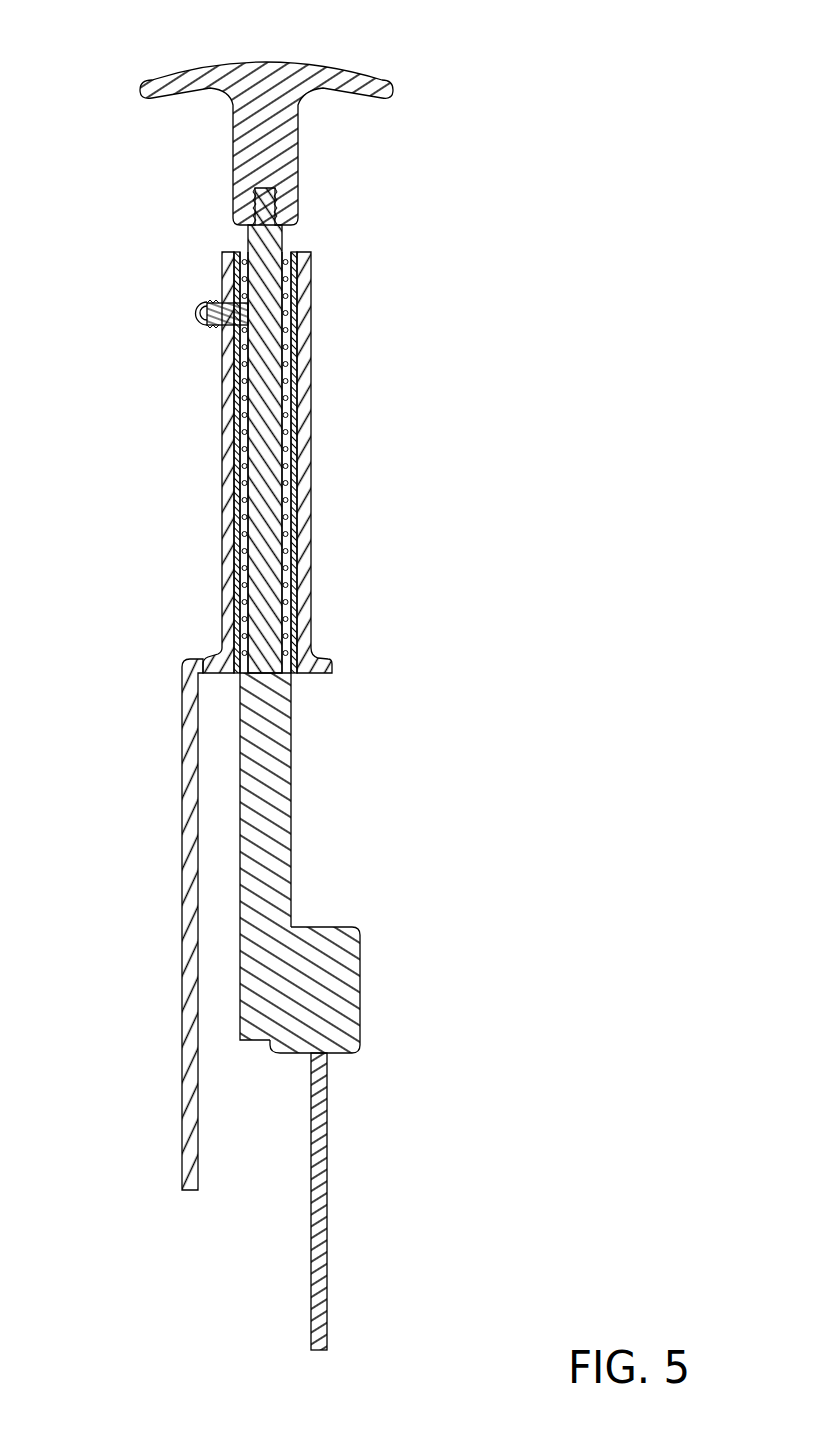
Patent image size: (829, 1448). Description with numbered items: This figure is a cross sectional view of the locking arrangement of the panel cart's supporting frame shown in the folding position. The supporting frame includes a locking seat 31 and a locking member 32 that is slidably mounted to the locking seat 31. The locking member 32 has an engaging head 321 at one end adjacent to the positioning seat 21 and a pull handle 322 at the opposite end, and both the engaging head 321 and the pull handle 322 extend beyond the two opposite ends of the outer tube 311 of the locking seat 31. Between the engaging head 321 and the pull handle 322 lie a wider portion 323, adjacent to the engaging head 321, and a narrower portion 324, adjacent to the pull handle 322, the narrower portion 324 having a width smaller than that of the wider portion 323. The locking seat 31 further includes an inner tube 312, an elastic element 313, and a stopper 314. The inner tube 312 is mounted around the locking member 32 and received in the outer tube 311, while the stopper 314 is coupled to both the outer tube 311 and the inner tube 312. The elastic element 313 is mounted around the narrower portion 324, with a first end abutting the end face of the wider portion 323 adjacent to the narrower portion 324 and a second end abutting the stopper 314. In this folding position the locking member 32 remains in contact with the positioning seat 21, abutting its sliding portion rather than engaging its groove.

The positioning seat 21 is at (320, 1150).
The locking seat 31 is at (193, 880).
The locking member 32 is at (345, 741).
The outer tube 311 is at (302, 540).
The inner tube 312 is at (297, 410).
The elastic element 313 is at (290, 342).
The stopper 314 is at (225, 305).
The engaging head 321 is at (332, 977).
The pull handle 322 is at (282, 90).
The wider portion 323 is at (267, 793).
The narrower portion 324 is at (267, 493).